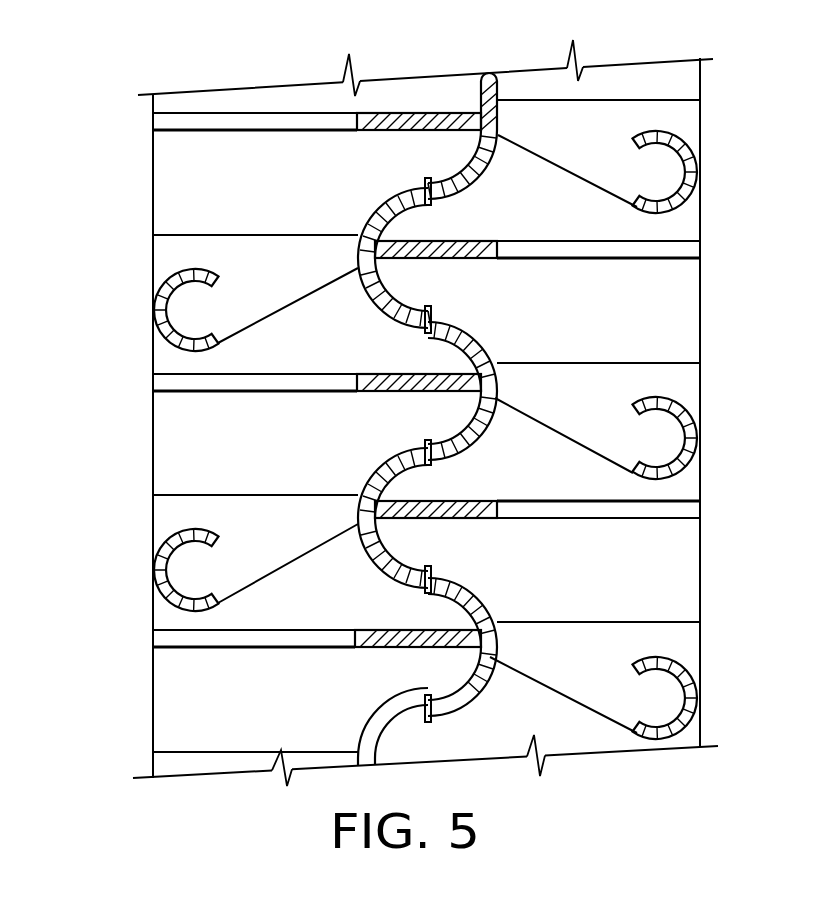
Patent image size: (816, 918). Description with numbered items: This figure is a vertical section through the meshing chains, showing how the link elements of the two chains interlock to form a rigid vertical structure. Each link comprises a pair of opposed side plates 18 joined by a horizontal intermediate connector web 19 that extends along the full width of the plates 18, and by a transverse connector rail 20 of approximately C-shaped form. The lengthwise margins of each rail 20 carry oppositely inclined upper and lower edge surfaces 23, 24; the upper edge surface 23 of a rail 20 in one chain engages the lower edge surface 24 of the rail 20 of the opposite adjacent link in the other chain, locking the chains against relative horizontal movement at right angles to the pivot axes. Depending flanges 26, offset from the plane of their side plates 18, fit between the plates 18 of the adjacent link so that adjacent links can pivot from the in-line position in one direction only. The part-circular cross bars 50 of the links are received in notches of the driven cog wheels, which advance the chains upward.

The side plate 18 is at (202, 168).
The intermediate connector web 19 is at (371, 131).
The transverse connector rail 20 is at (360, 218).
The upper edge surface 23 is at (436, 186).
The lower edge surface 24 is at (432, 200).
The side plate flange 26 is at (745, 646).
The cross bar 50 is at (157, 310).